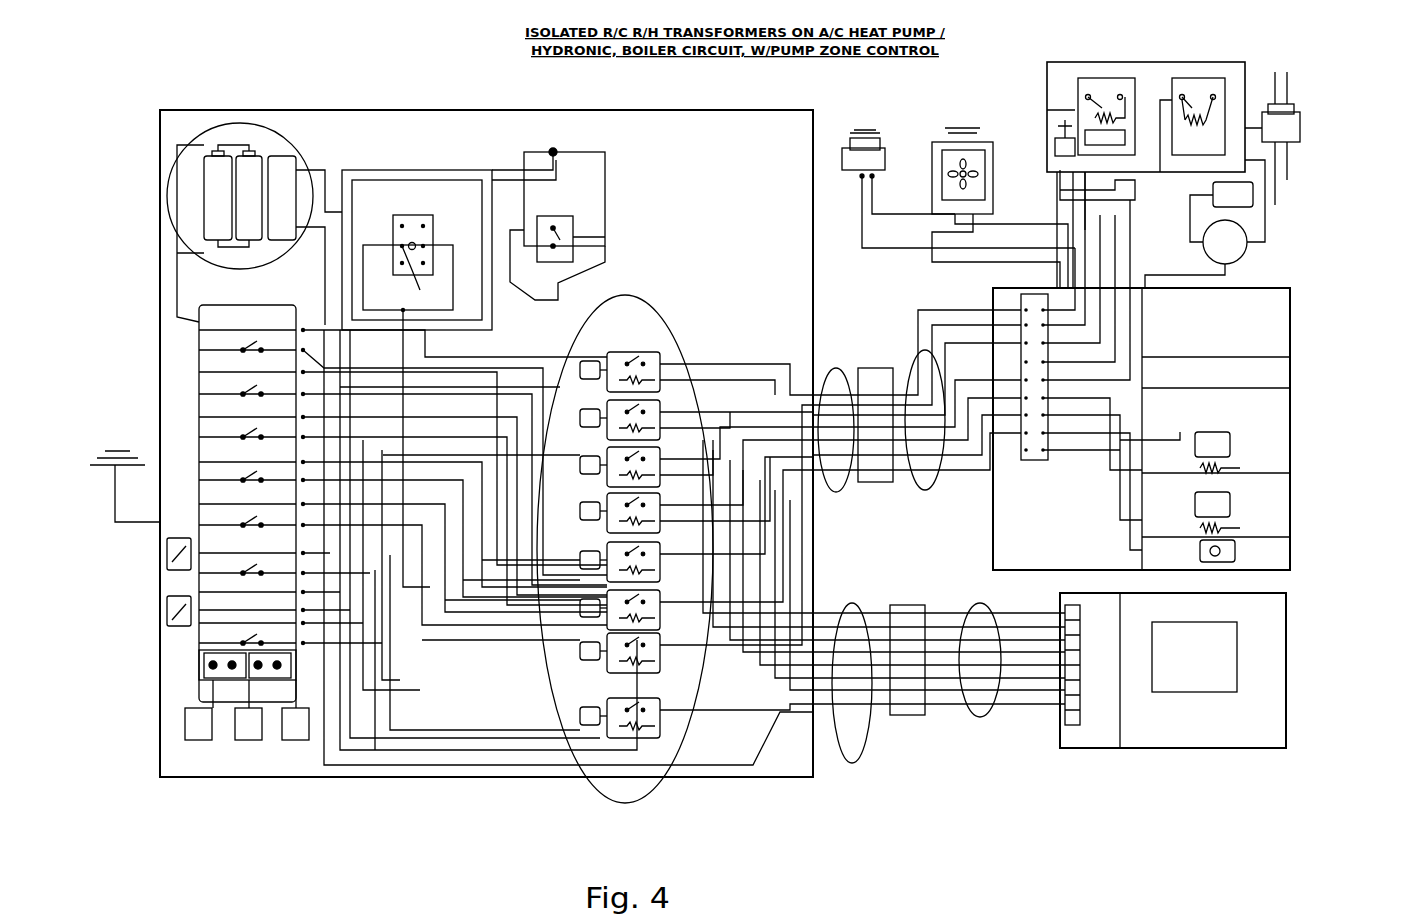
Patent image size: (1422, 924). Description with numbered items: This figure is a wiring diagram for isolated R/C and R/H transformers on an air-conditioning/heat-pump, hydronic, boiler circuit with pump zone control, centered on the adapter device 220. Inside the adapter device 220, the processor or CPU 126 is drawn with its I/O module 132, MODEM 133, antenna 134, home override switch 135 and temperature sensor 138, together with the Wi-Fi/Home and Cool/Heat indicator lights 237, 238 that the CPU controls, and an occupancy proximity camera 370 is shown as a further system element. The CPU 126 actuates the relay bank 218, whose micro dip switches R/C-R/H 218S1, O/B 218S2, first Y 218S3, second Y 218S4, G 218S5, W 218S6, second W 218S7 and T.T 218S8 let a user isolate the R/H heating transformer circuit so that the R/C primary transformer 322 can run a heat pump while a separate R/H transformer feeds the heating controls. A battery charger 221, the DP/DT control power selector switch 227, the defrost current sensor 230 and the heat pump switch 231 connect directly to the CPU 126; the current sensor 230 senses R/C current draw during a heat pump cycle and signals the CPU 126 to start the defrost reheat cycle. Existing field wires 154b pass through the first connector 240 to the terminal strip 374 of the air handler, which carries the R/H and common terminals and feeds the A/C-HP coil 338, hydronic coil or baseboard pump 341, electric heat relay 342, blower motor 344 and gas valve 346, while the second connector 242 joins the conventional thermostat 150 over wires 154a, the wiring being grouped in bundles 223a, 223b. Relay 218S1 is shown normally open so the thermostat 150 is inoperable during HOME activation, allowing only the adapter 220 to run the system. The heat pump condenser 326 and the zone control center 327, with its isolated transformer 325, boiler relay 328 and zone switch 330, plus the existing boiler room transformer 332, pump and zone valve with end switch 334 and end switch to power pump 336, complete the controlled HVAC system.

The processor or CPU 126 is at (197, 362).
The I/O device or module 132 is at (167, 618).
The MODEM 133 is at (167, 562).
The antenna 134 is at (119, 486).
The home override switch 135 is at (290, 745).
The temperature sensor 138 is at (245, 745).
The conventional thermostat 150 is at (1287, 678).
The wires 154a is at (980, 715).
The existing field wires 154b is at (928, 490).
The micro dip switches 218 is at (635, 802).
The R/C-R/H switch 218S1 is at (645, 362).
The O/B switch 218S2 is at (650, 410).
The Y1 switch 218S3 is at (630, 460).
The Y2 switch 218S4 is at (628, 505).
The G switch 218S5 is at (628, 555).
The W switch 218S6 is at (627, 602).
The W2 switch 218S7 is at (645, 643).
The T.T switch 218S8 is at (650, 720).
The adapter device 220 is at (440, 108).
The battery charger 221 is at (245, 125).
The wire bundle 223a is at (845, 490).
The wire bundle 223b is at (845, 760).
The control power selector switch 227 is at (430, 226).
The defrost current sensor 230 is at (560, 158).
The heat pump switch 231 is at (600, 236).
The Wi-Fi/Home indicator light 237 is at (203, 685).
The Cool/Heat indicator light 238 is at (285, 677).
The first connector 240 is at (865, 380).
The second connector 242 is at (910, 695).
The primary transformer 322 is at (885, 148).
The isolated transformer 325 is at (1055, 105).
The heat pump condenser 326 is at (965, 140).
The zone control center 327 is at (1095, 120).
The boiler 328 is at (1110, 100).
The zone switch 330 is at (1210, 100).
The boiler room transformer 332 is at (1300, 128).
The pump and zone valve with end switch 334 is at (1295, 190).
The end switch to power pump 336 is at (1280, 236).
The A/C-HP coil 338 is at (1285, 312).
The hydronic coil or baseboard pump 341 is at (1285, 378).
The electric heat relay 342 is at (1285, 432).
The blower motor 344 is at (1285, 497).
The gas valve 346 is at (1285, 548).
The wireless occupancy proximity camera 370 is at (185, 745).
The terminal block 374 is at (1040, 468).